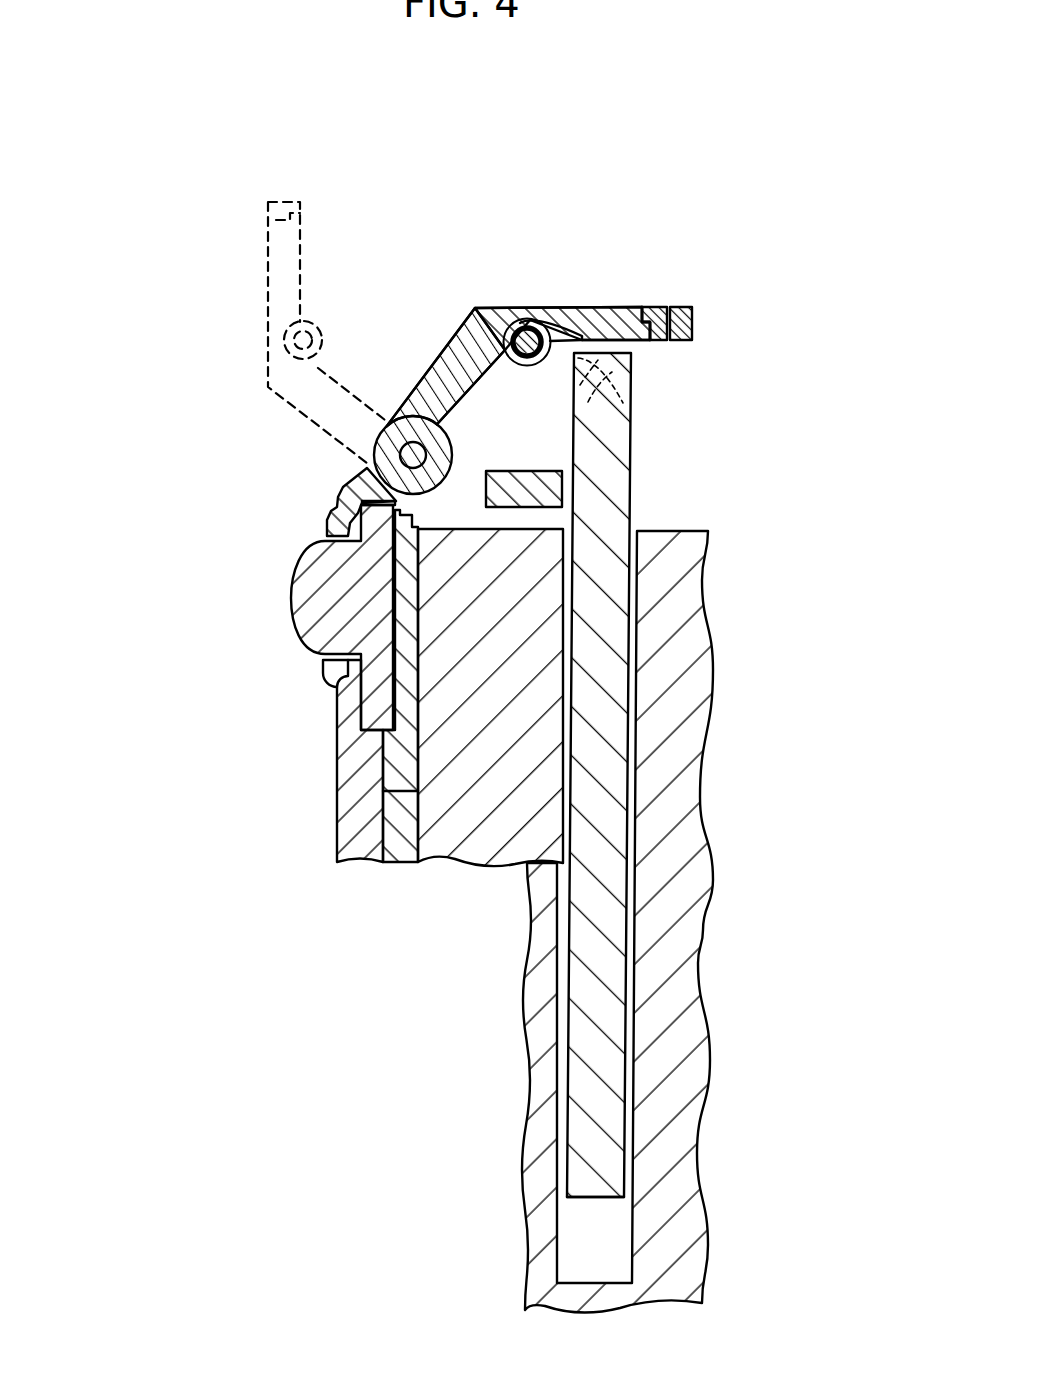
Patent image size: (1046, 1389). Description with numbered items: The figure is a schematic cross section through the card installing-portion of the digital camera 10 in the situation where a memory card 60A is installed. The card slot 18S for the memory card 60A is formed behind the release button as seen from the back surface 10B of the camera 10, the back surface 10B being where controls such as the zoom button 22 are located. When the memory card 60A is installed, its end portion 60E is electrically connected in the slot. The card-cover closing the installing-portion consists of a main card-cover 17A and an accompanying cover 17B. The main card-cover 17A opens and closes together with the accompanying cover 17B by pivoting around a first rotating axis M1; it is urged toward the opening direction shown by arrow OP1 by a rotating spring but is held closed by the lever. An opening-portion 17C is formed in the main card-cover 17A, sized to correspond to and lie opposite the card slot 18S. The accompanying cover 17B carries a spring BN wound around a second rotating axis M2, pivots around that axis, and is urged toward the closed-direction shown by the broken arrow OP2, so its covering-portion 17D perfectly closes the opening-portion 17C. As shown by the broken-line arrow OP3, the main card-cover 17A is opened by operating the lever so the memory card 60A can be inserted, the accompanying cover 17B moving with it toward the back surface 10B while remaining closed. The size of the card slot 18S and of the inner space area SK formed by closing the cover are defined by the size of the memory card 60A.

The digital camera 10 is at (189, 489).
The back surface 10B is at (337, 812).
The zoom button 22 is at (308, 643).
The main card-cover 17A is at (476, 308).
The accompanying cover 17B is at (643, 350).
The opening-portion 17C is at (570, 310).
The covering-portion 17D is at (600, 310).
The first rotating axis M1 is at (396, 428).
The second rotating axis M2 is at (527, 318).
The spring BN is at (523, 366).
The opening direction OP1 is at (373, 262).
The closed-direction OP2 is at (633, 407).
The broken-line arrow OP3 is at (268, 208).
The inner space area SK is at (670, 381).
The memory card 60A is at (632, 452).
The end portion 60E is at (597, 1197).
The card slot 18S is at (638, 533).